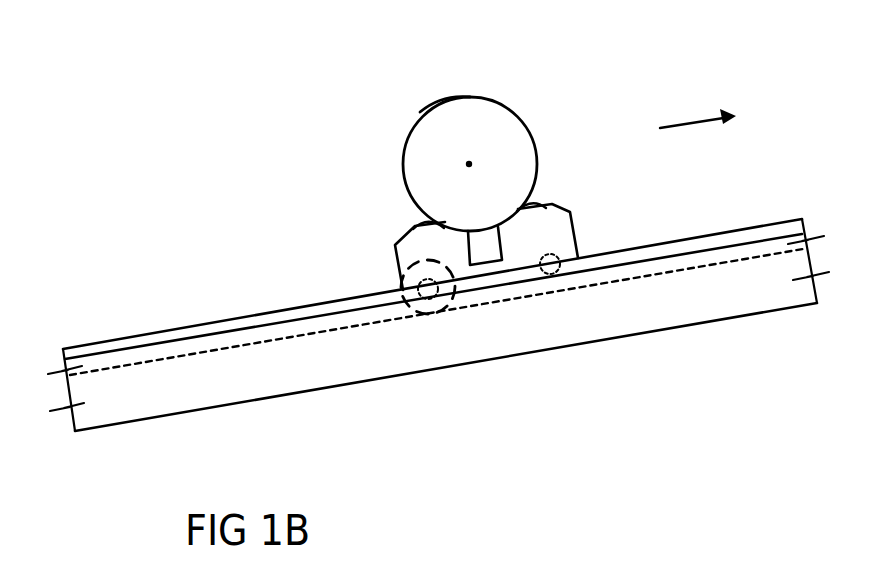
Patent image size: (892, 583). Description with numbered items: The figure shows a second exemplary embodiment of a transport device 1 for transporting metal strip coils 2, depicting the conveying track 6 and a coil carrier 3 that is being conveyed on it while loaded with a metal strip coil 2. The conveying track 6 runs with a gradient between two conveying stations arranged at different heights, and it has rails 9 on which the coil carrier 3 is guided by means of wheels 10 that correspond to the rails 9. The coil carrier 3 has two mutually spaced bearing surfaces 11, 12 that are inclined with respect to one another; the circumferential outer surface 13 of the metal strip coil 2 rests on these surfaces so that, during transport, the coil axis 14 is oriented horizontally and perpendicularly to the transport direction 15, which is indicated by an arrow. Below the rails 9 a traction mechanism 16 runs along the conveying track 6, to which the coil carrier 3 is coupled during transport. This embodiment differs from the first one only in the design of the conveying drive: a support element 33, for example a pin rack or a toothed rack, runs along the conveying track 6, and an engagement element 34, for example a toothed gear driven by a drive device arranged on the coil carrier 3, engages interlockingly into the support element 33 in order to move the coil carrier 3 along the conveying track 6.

The transport device 1 is at (156, 165).
The metal strip coil 2 is at (498, 123).
The coil carrier 3 is at (578, 246).
The conveying track 6 is at (605, 340).
The rails 9 is at (193, 338).
The wheels 10 is at (440, 282).
The bearing surface 11 is at (446, 231).
The bearing surface 12 is at (522, 230).
The circumferential outer surface 13 is at (426, 107).
The coil axis 14 is at (466, 163).
The transport direction 15 is at (692, 126).
The traction mechanism 16 is at (338, 367).
The support element 33 is at (253, 342).
The engagement element 34 is at (403, 276).